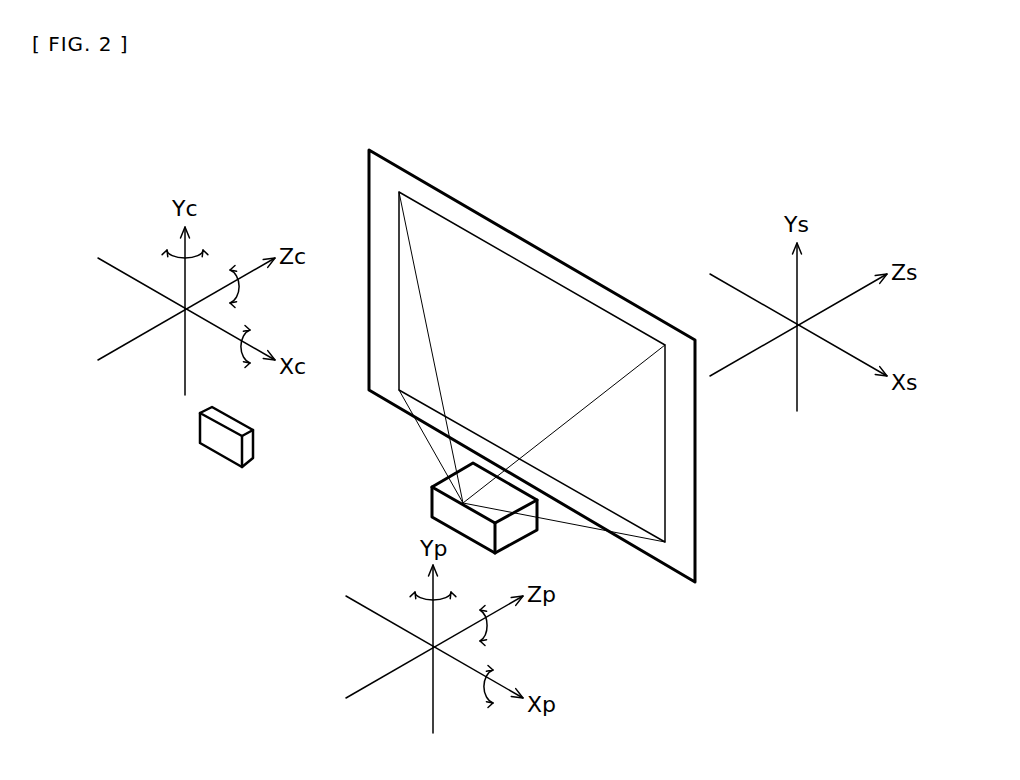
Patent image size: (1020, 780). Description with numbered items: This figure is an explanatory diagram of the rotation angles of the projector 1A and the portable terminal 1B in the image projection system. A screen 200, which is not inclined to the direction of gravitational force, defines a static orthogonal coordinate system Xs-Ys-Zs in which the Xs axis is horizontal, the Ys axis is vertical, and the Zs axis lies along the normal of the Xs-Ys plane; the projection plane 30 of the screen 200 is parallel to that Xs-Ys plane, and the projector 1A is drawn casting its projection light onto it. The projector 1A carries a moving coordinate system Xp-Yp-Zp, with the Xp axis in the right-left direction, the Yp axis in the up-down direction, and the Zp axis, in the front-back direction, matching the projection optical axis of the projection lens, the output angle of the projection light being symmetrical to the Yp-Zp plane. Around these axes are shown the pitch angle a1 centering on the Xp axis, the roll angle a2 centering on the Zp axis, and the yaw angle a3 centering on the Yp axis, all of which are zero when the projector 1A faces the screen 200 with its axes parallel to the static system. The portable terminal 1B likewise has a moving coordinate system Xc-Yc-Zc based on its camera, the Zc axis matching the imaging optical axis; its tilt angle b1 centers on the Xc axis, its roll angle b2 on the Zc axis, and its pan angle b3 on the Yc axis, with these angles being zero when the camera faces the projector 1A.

The screen 200 is at (695, 530).
The projection plane 30 is at (448, 220).
The projector 1A is at (434, 508).
The portable terminal 1B is at (200, 462).
The pitch angle a1 is at (474, 699).
The roll angle a2 is at (506, 629).
The yaw angle a3 is at (419, 599).
The tilt angle b1 is at (228, 361).
The roll angle b2 is at (257, 289).
The pan angle b3 is at (171, 259).